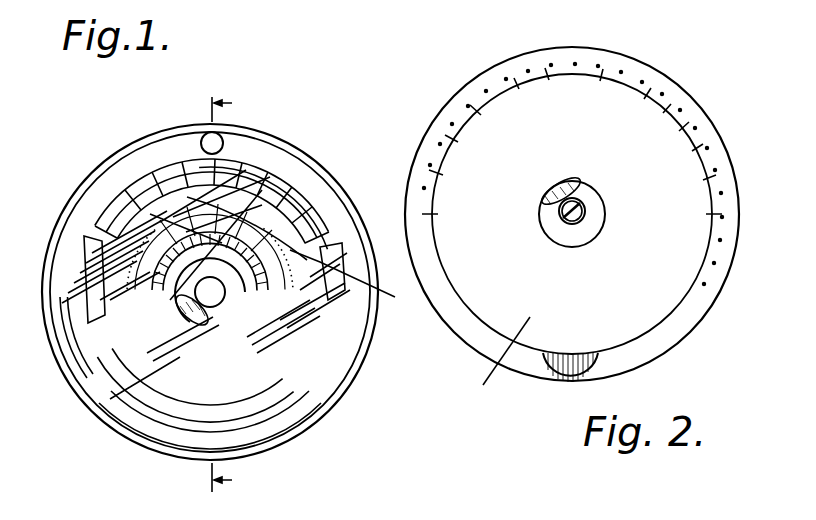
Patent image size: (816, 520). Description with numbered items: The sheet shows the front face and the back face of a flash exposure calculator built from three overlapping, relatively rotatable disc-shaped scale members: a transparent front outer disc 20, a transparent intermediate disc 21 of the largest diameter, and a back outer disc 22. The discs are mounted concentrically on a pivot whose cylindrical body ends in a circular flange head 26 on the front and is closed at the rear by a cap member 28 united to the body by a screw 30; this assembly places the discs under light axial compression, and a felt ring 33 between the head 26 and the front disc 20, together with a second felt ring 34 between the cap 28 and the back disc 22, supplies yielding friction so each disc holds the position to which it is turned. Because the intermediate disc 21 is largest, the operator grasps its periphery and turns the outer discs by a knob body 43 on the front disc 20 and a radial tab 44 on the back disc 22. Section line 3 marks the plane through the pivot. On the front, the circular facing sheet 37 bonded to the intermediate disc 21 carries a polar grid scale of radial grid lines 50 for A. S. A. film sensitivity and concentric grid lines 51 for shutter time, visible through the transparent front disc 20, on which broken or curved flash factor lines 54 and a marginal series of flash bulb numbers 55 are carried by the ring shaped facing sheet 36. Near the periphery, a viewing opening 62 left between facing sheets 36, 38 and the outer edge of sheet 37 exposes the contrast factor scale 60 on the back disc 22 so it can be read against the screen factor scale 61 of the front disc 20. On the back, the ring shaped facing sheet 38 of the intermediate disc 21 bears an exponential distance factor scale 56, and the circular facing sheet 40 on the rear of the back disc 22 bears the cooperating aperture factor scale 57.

In FIG. 1, the front outer disc 20 is at (114, 160).
In FIG. 1, the intermediate disc 21 is at (80, 176).
In FIG. 2, the intermediate disc 21 is at (462, 80).
In FIG. 1, the knob body 43 is at (205, 138).
In FIG. 1, the section line 3- 3 is at (228, 293).
In FIG. 1, the flange head 26 is at (223, 322).
In FIG. 1, the felt ring 33 is at (198, 317).
In FIG. 1, the marginal series of numbers 55 is at (255, 168).
In FIG. 1, the flash factor lines 54 is at (343, 203).
In FIG. 1, the concentric grid lines 51 is at (351, 281).
In FIG. 1, the radial grid lines 50 is at (128, 212).
In FIG. 1, the ring shaped facing sheet 36 is at (66, 318).
In FIG. 1, the circular facing sheet 37 is at (281, 383).
In FIG. 1, the viewing opening 62 is at (148, 397).
In FIG. 1, the contrast factor scale 60 is at (222, 447).
In FIG. 1, the screen factor scale 61 is at (255, 436).
In FIG. 2, the back outer disc 22 is at (508, 84).
In FIG. 2, the distance factor scale 56 is at (617, 63).
In FIG. 2, the aperture factor scale 57 is at (675, 120).
In FIG. 2, the cap member 28 is at (574, 238).
In FIG. 2, the screw 30 is at (606, 214).
In FIG. 2, the second felt ring 34 is at (547, 193).
In FIG. 2, the ring shaped facing sheet 38 is at (672, 336).
In FIG. 2, the tab 44 is at (563, 370).
In FIG. 2, the circular facing sheet 40 is at (497, 359).